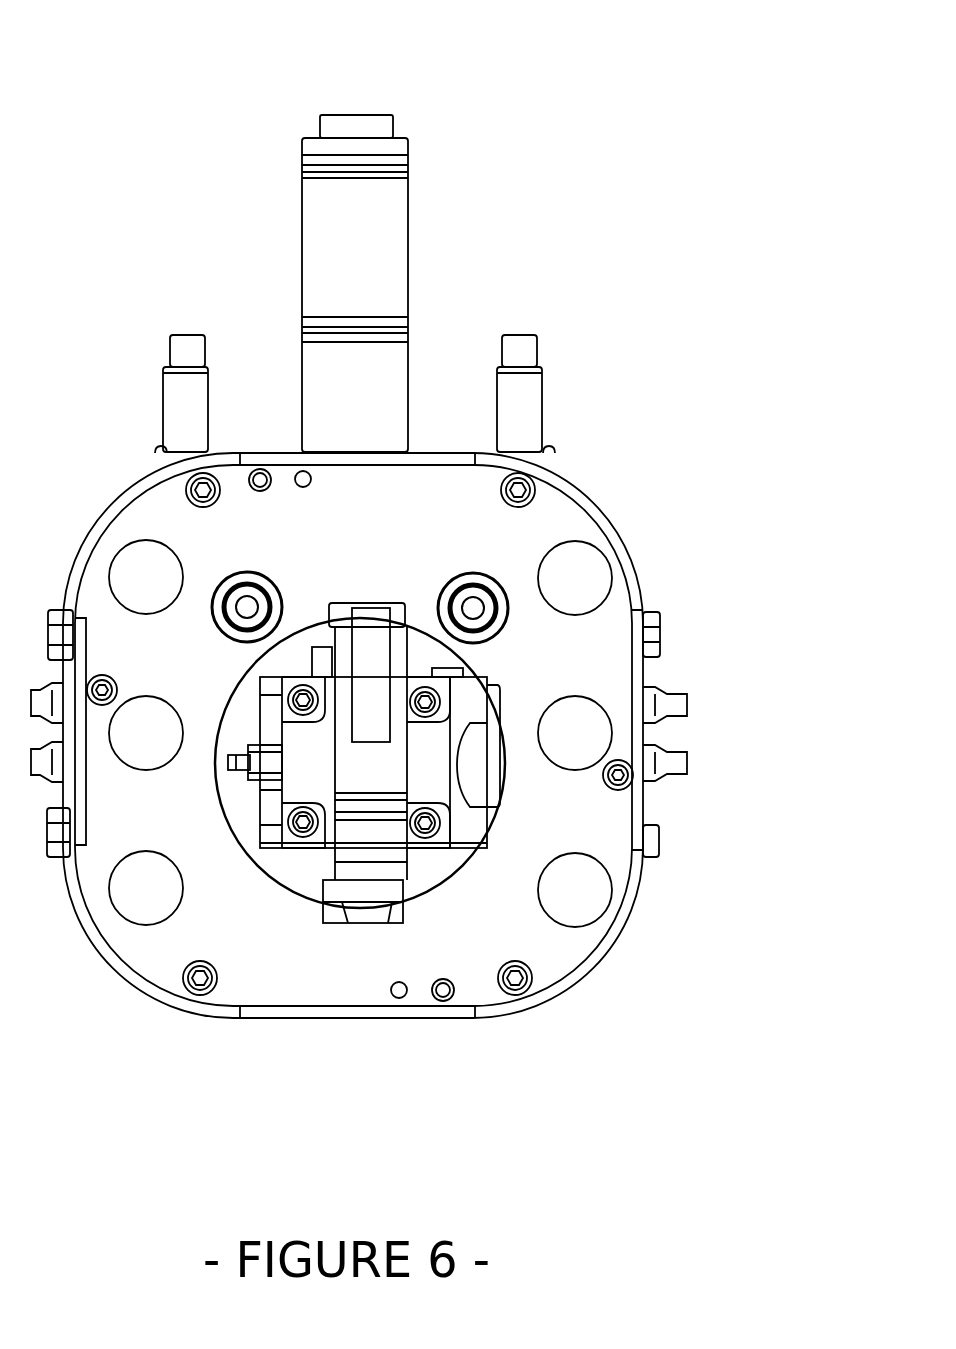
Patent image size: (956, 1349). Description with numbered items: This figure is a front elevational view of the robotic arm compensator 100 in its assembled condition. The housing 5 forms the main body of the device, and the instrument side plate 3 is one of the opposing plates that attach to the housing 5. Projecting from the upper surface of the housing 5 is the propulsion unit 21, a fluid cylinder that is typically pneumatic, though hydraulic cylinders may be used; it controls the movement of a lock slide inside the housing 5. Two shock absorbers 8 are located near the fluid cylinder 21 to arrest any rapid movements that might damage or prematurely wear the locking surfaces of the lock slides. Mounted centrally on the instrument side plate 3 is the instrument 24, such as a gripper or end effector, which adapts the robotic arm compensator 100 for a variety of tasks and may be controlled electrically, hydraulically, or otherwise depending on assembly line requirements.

The robotic arm compensator 100 is at (685, 122).
The instrument side plate 3 is at (357, 492).
The housing 5 is at (537, 534).
The shock absorber 8 is at (185, 412).
The propulsion unit 21 is at (332, 257).
The instrument 24 is at (443, 750).